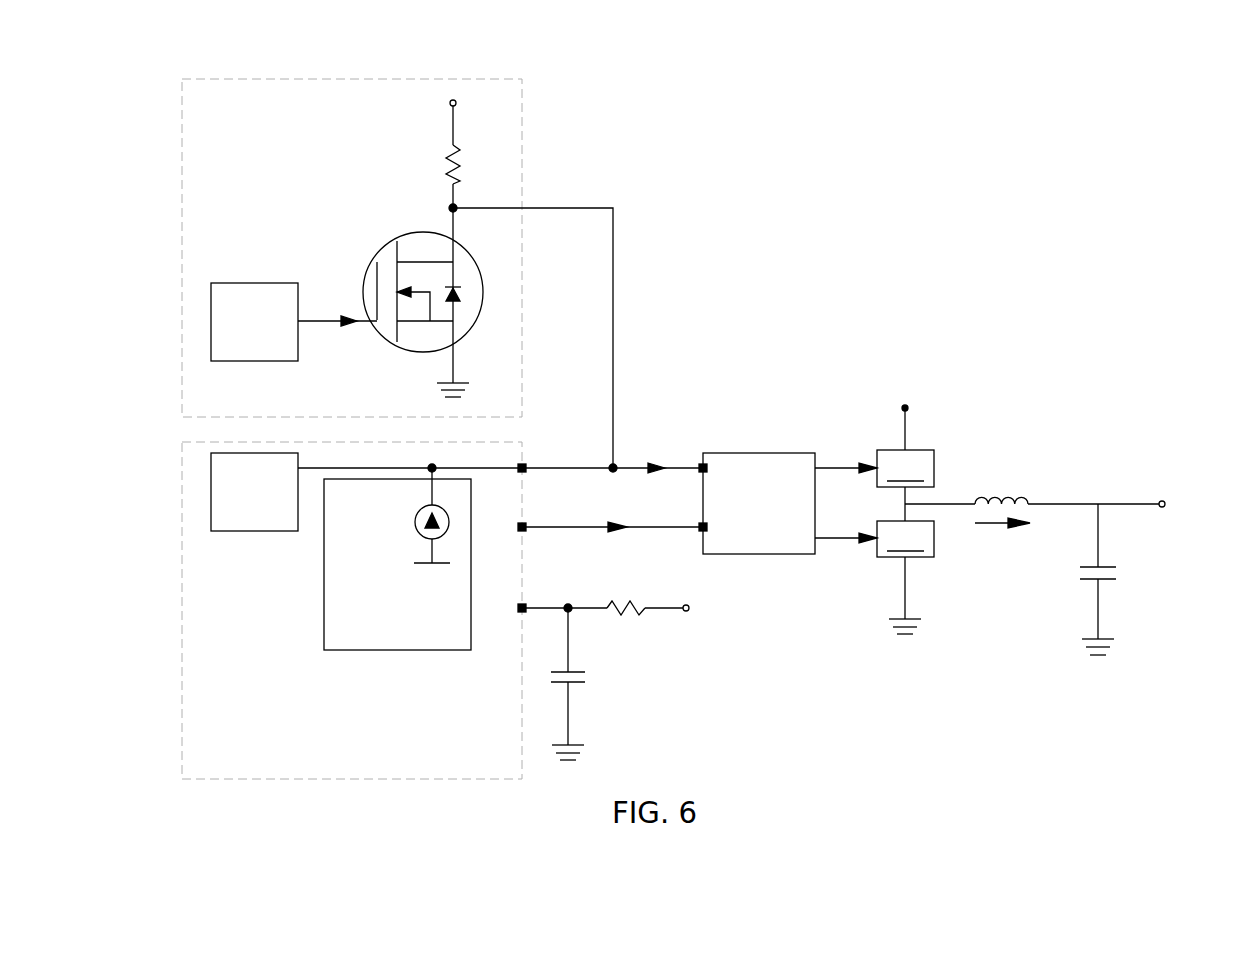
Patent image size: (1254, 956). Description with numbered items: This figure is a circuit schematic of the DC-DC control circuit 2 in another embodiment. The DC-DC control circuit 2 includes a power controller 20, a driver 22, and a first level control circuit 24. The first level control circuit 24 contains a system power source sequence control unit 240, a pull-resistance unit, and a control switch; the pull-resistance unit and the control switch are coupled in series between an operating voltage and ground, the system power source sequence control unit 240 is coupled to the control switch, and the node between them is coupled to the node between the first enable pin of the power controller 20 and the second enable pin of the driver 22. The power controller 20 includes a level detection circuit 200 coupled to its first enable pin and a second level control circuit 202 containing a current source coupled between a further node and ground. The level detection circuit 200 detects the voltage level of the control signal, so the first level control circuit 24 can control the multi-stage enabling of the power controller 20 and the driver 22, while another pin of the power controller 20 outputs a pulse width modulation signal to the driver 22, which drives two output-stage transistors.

The DC-DC control circuit 2 is at (170, 73).
The first level control circuit 24 is at (224, 116).
The system power source sequence control unit 240 is at (274, 333).
The power controller 20 is at (224, 769).
The level detection circuit 200 is at (274, 503).
The second level control circuit 202 is at (373, 508).
The driver 22 is at (772, 508).